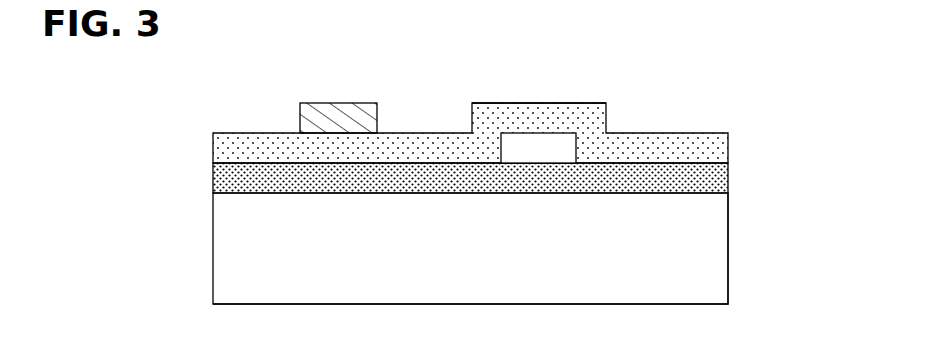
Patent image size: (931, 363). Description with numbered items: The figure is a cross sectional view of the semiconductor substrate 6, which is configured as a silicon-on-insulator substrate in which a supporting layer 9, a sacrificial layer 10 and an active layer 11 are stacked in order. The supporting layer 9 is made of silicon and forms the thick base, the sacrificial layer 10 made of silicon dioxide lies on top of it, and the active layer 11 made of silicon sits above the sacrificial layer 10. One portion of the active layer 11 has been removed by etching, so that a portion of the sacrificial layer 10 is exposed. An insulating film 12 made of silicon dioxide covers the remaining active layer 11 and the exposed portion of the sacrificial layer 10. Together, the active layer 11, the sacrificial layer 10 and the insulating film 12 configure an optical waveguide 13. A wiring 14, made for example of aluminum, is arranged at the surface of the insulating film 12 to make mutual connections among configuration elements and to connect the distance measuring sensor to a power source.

The semiconductor substrate 6 is at (731, 282).
The supporting layer 9 is at (716, 236).
The sacrificial layer 10 is at (722, 178).
The active layer 11 is at (565, 152).
The insulating film 12 is at (592, 113).
The optical waveguide 13 is at (518, 102).
The wiring 14 is at (320, 104).